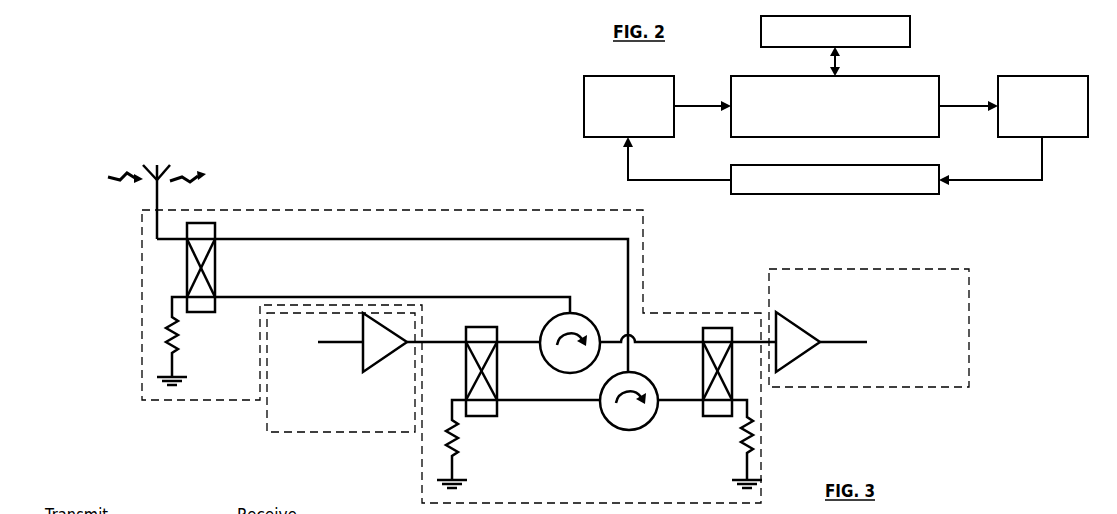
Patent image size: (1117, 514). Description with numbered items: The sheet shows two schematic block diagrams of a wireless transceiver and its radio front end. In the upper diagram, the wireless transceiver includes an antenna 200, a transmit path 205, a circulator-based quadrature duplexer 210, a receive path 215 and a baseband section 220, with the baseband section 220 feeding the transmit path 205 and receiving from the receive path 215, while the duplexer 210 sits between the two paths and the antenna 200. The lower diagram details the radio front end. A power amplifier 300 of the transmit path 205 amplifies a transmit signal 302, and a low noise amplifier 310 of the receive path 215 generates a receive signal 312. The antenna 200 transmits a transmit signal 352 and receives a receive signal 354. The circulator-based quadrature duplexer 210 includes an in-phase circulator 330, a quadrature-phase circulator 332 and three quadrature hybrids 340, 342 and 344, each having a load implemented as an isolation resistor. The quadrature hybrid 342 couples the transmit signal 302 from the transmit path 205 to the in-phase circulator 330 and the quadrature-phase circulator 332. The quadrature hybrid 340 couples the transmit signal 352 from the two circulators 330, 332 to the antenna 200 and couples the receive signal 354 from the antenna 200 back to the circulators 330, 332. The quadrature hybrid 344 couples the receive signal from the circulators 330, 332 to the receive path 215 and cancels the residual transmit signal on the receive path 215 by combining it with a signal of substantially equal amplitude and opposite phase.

In FIG. 2, the antenna 200 is at (835, 31).
In FIG. 3, the antenna 200 is at (136, 194).
In FIG. 2, the transmit path 205 is at (629, 106).
In FIG. 3, the transmit path 205 is at (404, 423).
In FIG. 2, the circulator-based quadrature duplexer 210 is at (835, 106).
In FIG. 3, the circulator-based quadrature duplexer 210 is at (657, 472).
In FIG. 2, the receive path 215 is at (1043, 106).
In FIG. 3, the receive path 215 is at (932, 298).
In FIG. 2, the baseband section 220 is at (835, 179).
In FIG. 3, the power amplifier 300 is at (414, 342).
In FIG. 3, the transmit signal 302 is at (321, 369).
In FIG. 3, the low noise amplifier 310 is at (798, 342).
In FIG. 3, the receive signal 312 is at (891, 337).
In FIG. 3, the in-phase circulator 330 is at (621, 343).
In FIG. 3, the quadrature-phase circulator 332 is at (651, 401).
In FIG. 3, the quadrature hybrid 340 is at (201, 326).
In FIG. 3, the quadrature hybrid 342 is at (481, 429).
In FIG. 3, the quadrature hybrid 344 is at (718, 429).
In FIG. 3, the transmit signal 352 is at (83, 179).
In FIG. 3, the receive signal 354 is at (229, 179).